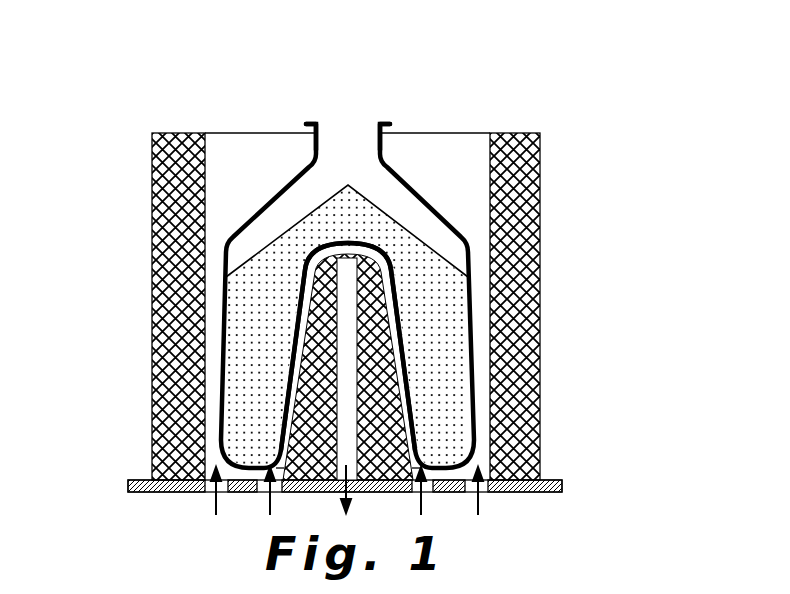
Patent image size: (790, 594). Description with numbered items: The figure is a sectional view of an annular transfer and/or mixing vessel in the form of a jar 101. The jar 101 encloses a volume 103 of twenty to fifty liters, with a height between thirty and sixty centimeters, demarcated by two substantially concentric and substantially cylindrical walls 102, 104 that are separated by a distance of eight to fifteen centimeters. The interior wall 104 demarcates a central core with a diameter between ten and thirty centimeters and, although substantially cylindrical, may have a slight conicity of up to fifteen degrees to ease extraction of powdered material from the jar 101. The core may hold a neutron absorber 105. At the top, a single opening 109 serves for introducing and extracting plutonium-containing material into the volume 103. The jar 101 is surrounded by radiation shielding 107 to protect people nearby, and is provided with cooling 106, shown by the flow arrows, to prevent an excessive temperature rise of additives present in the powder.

The jar 101 is at (356, 304).
The exterior cylindrical wall 102 is at (470, 313).
The volume 103 is at (435, 288).
The interior wall 104 is at (407, 373).
The neutron absorber 105 is at (385, 435).
The cooling 106 is at (212, 482).
The radiation shielding 107 is at (540, 411).
The opening 109 is at (383, 123).